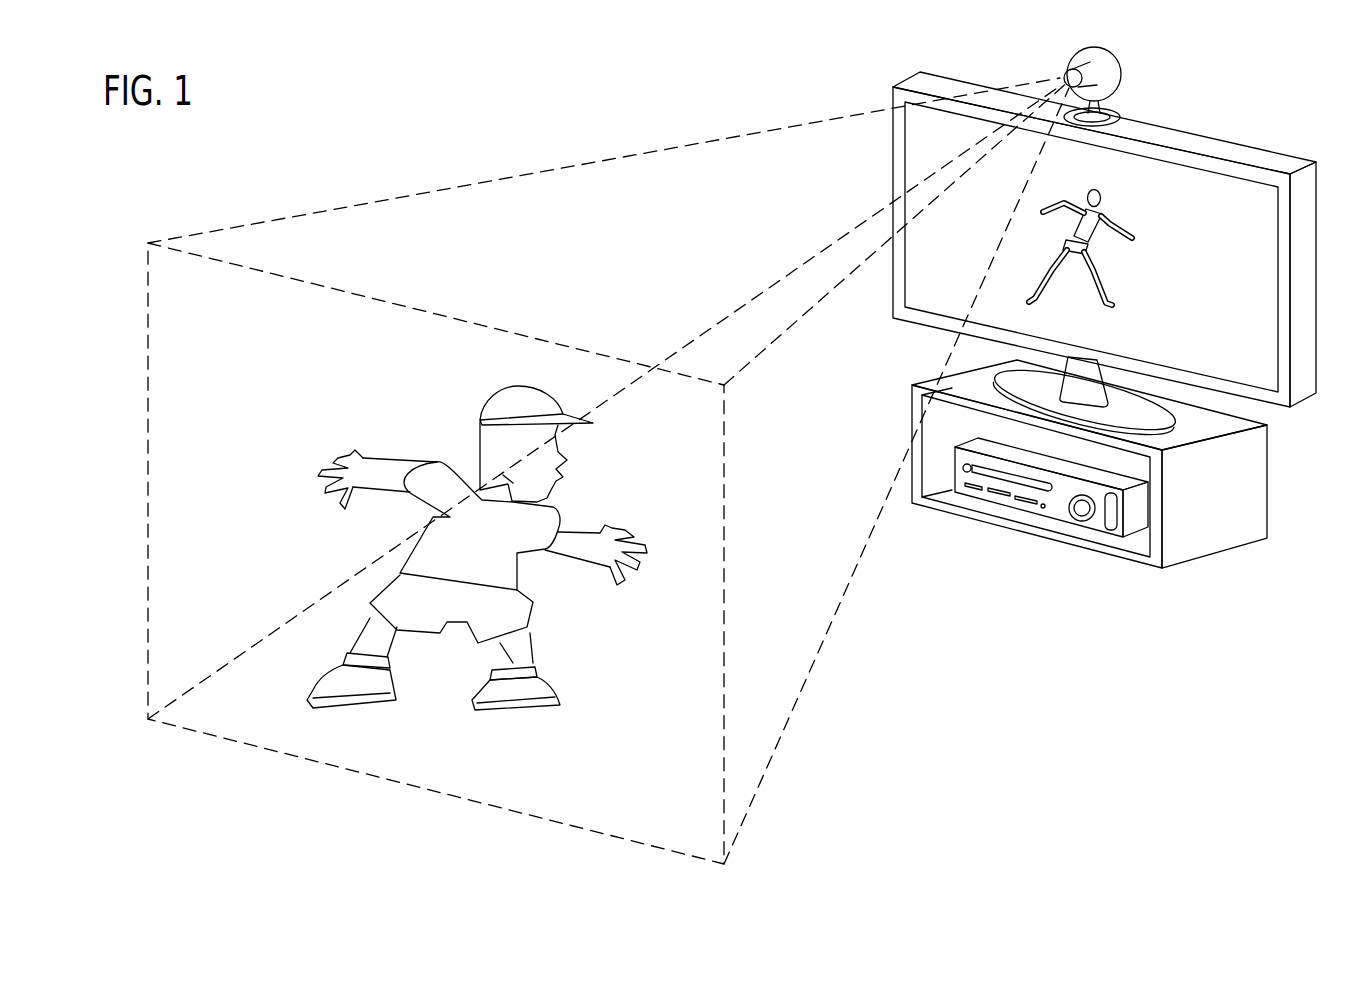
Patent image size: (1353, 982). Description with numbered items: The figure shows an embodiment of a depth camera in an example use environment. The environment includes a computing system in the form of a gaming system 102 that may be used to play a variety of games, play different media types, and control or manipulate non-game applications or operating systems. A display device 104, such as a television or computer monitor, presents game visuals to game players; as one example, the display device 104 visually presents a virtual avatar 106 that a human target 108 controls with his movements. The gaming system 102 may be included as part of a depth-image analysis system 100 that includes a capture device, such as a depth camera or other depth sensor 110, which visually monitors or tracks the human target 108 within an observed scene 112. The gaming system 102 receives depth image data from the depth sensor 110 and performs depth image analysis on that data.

The depth-image analysis system 100 is at (519, 153).
The gaming system 102 is at (1057, 517).
The display device 104 is at (1193, 133).
The virtual avatar 106 is at (1103, 190).
The human target 108 is at (481, 562).
The depth sensor 110 is at (1113, 60).
The observed scene 112 is at (236, 338).